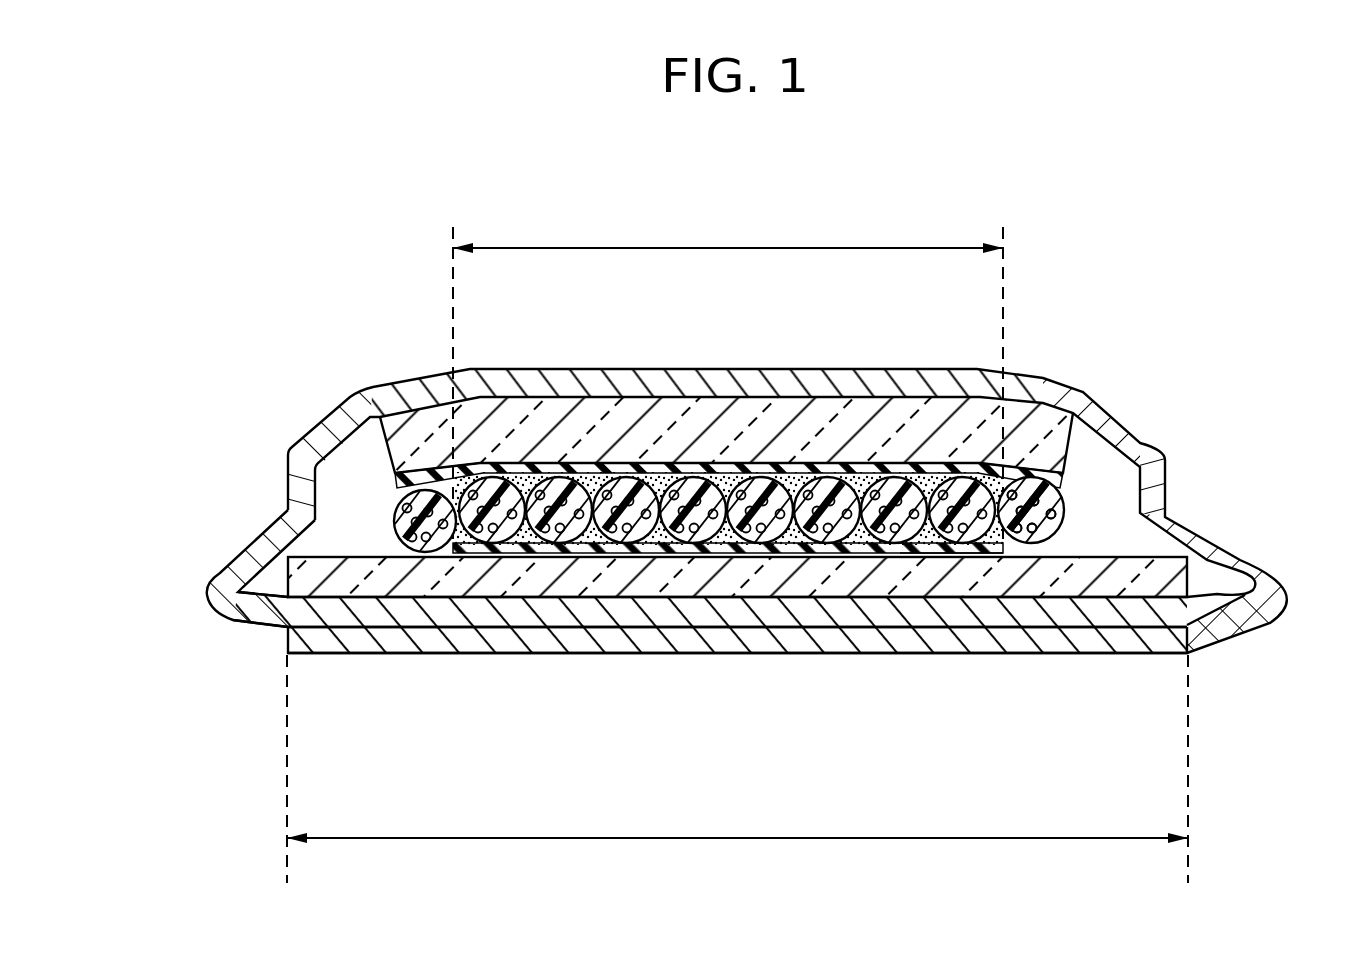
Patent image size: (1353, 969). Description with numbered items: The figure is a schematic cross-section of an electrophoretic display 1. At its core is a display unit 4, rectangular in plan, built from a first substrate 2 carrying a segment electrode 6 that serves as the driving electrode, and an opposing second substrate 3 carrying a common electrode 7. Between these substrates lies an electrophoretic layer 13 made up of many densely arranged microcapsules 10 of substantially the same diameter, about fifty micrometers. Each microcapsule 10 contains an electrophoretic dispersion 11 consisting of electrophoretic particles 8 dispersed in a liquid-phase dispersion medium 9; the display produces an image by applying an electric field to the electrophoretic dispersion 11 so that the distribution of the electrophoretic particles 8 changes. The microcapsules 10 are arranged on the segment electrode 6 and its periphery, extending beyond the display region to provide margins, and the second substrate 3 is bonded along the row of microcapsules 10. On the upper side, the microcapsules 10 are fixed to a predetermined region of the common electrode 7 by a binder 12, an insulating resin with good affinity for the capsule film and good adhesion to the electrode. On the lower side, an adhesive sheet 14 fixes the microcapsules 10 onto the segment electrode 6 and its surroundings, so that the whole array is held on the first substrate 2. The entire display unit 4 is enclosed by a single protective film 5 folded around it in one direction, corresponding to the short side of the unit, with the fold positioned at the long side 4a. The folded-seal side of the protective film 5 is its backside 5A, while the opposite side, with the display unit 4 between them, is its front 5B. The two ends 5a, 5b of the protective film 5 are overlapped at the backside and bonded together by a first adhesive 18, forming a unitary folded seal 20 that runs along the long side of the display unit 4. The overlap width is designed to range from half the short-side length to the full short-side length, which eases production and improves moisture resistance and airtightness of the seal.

The electrophoretic display 1 is at (1191, 224).
The first substrate 2 is at (1170, 588).
The second substrate 3 is at (1040, 405).
The display unit 4 is at (1106, 472).
The long side 4a is at (275, 574).
The protective film 5 is at (1158, 477).
The backside 5A is at (337, 660).
The front 5B is at (372, 385).
The end 5a is at (470, 616).
The end 5b is at (531, 640).
The segment electrode 6 is at (873, 550).
The common electrode 7 is at (868, 466).
The electrophoretic particles 8 is at (1020, 540).
The liquid-phase dispersion medium 9 is at (1027, 532).
The microcapsules 10 is at (1072, 526).
The electrophoretic dispersion 11 is at (1010, 550).
The binder 12 is at (535, 466).
The electrophoretic layer 13 is at (372, 516).
The adhesive sheet 14 is at (784, 550).
The first adhesive 18 is at (632, 629).
The folded seal 20 is at (408, 660).